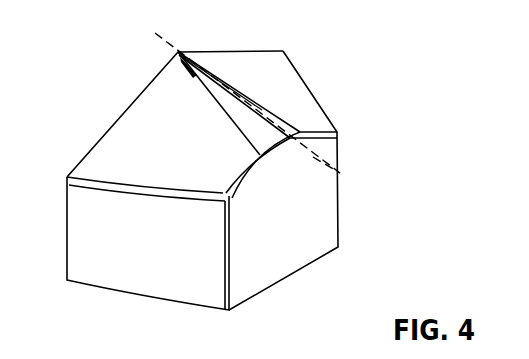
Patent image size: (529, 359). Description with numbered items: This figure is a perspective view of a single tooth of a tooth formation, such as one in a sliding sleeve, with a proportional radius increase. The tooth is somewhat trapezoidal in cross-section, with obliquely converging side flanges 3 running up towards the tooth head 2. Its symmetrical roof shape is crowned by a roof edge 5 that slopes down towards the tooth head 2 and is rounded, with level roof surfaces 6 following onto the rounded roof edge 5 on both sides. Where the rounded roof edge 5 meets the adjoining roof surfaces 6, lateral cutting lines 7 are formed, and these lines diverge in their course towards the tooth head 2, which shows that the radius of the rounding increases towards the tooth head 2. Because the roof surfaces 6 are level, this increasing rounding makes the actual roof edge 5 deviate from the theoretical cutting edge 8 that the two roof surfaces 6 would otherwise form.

The tooth head 2 is at (292, 212).
The side flanges 3 is at (135, 238).
The roof edge 5 is at (230, 97).
The roof surfaces 6 is at (177, 135).
The lateral cutting lines 7 is at (198, 87).
The theoretical cutting edge 8 is at (297, 147).